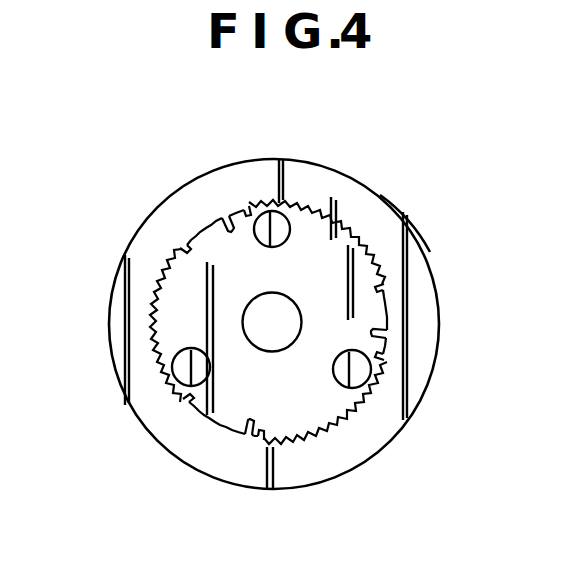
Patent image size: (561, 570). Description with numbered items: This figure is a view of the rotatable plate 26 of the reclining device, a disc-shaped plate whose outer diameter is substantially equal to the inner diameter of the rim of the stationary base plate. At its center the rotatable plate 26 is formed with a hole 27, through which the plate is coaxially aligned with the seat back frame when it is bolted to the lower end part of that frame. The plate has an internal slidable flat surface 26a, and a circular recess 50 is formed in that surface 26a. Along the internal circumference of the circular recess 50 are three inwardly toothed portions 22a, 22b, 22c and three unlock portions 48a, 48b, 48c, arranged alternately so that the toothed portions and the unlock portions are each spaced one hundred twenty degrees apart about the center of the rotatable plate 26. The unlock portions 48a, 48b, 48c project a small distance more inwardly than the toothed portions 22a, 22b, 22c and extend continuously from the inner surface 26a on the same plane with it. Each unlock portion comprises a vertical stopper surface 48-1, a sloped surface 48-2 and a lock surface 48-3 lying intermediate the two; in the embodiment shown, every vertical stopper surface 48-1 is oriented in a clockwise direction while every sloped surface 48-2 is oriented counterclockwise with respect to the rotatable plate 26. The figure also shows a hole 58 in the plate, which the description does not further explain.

The rotatable plate 26 is at (198, 177).
The internal slidable flat surface 26a is at (405, 228).
The hole 27 is at (292, 299).
The first toothed portion 22a is at (337, 430).
The second toothed portion 22b is at (157, 308).
The third toothed portion 22c is at (318, 208).
The first unlock portion 48a is at (212, 427).
The second unlock portion 48b is at (211, 213).
The third unlock portion 48c is at (392, 323).
The vertical stopper surface 48-1 is at (253, 202).
The sloped surface 48-2 is at (180, 244).
The lock surface 48-3 is at (229, 205).
The circular recess 50 is at (332, 237).
The hole 58 is at (356, 390).